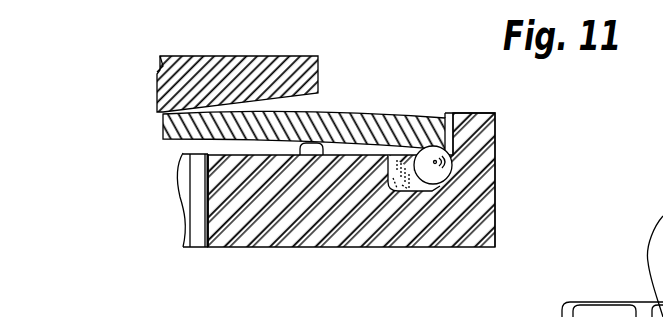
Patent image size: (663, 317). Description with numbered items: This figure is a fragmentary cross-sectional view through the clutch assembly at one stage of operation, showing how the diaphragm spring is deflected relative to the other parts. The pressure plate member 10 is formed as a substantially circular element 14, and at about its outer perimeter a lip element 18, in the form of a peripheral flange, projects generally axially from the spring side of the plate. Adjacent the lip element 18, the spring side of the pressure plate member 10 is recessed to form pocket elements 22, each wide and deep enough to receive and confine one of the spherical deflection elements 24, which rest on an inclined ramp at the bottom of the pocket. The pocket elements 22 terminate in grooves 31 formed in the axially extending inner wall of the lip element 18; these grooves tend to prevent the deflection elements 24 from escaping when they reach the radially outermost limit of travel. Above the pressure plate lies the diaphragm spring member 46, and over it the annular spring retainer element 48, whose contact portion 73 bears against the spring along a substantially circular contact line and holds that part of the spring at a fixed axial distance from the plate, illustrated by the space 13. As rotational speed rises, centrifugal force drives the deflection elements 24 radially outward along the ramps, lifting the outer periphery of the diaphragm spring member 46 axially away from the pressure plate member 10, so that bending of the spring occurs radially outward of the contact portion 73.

The pressure plate member 10 is at (170, 229).
The space 13 is at (183, 153).
The substantially circular element 14 is at (323, 155).
The lip element 18 is at (470, 113).
The pocket elements 22 is at (420, 188).
The deflection elements 24 is at (433, 186).
The grooves 31 is at (445, 113).
The diaphragm spring member 46 is at (158, 138).
The spring retainer element 48 is at (143, 116).
The contact portion 73 is at (168, 108).